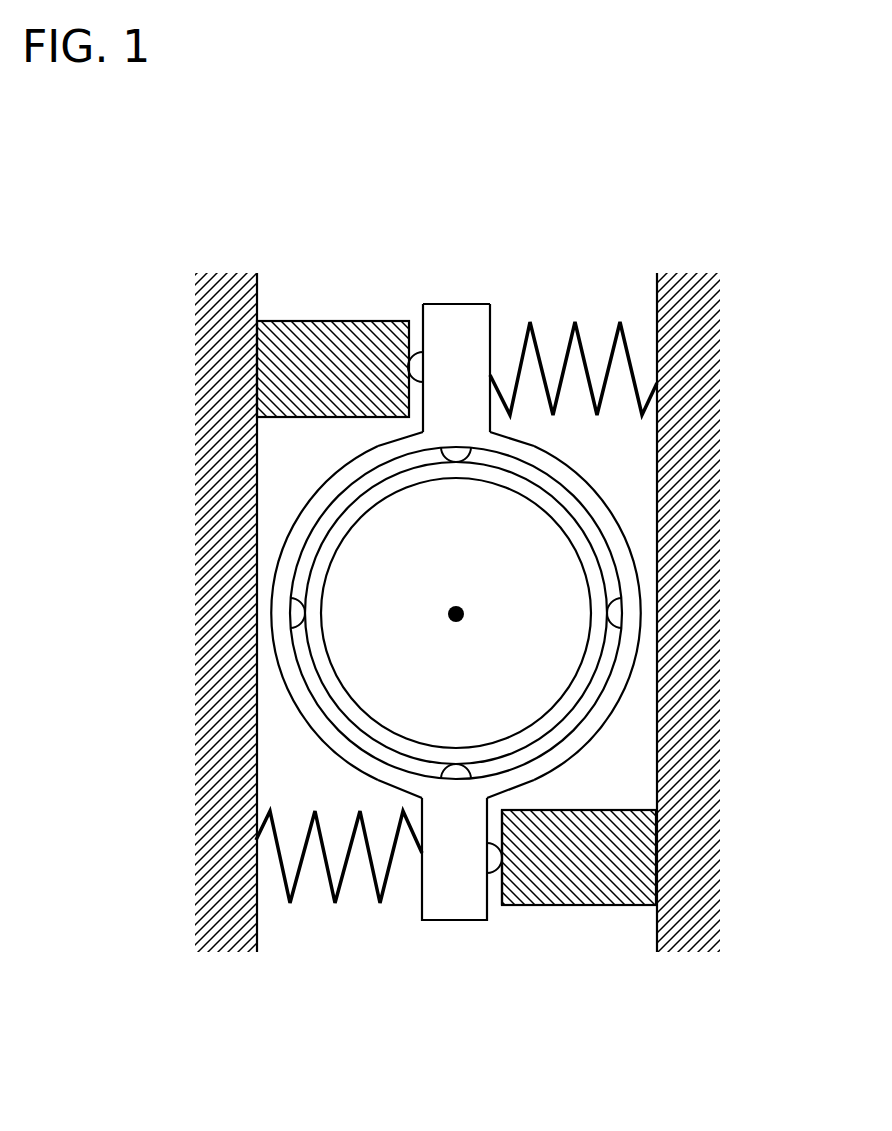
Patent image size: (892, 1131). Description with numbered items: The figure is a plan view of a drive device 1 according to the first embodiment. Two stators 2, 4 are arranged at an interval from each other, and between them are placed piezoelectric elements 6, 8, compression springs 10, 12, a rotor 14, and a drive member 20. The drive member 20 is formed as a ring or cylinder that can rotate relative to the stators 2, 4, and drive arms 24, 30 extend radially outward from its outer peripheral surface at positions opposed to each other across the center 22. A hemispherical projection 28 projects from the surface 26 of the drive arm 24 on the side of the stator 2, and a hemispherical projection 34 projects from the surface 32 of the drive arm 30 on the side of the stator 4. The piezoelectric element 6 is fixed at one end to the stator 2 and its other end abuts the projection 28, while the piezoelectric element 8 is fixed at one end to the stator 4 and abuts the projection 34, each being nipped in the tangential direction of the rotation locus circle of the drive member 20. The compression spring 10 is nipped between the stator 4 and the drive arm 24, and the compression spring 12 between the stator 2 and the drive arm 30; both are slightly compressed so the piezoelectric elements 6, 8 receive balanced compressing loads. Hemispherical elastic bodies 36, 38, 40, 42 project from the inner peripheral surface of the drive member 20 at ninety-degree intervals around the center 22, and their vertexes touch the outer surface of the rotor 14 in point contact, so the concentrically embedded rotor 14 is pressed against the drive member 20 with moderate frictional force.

The drive device 1 is at (609, 256).
The stator 2 is at (218, 555).
The stator 4 is at (695, 535).
The piezoelectric element 6 is at (325, 332).
The piezoelectric element 8 is at (565, 885).
The compression spring 10 is at (533, 343).
The compression spring 12 is at (370, 885).
The rotor 14 is at (362, 510).
The drive member 20 is at (577, 490).
The center 22 is at (465, 620).
The drive arm 24 is at (462, 315).
The surface 26 is at (420, 302).
The hemispherical projection 28 is at (398, 335).
The drive arm 30 is at (450, 905).
The surface 32 is at (489, 917).
The hemispherical projection 34 is at (505, 870).
The hemispherical elastic body 36 is at (470, 455).
The hemispherical elastic body 38 is at (620, 613).
The hemispherical elastic body 40 is at (470, 772).
The hemispherical elastic body 42 is at (292, 615).